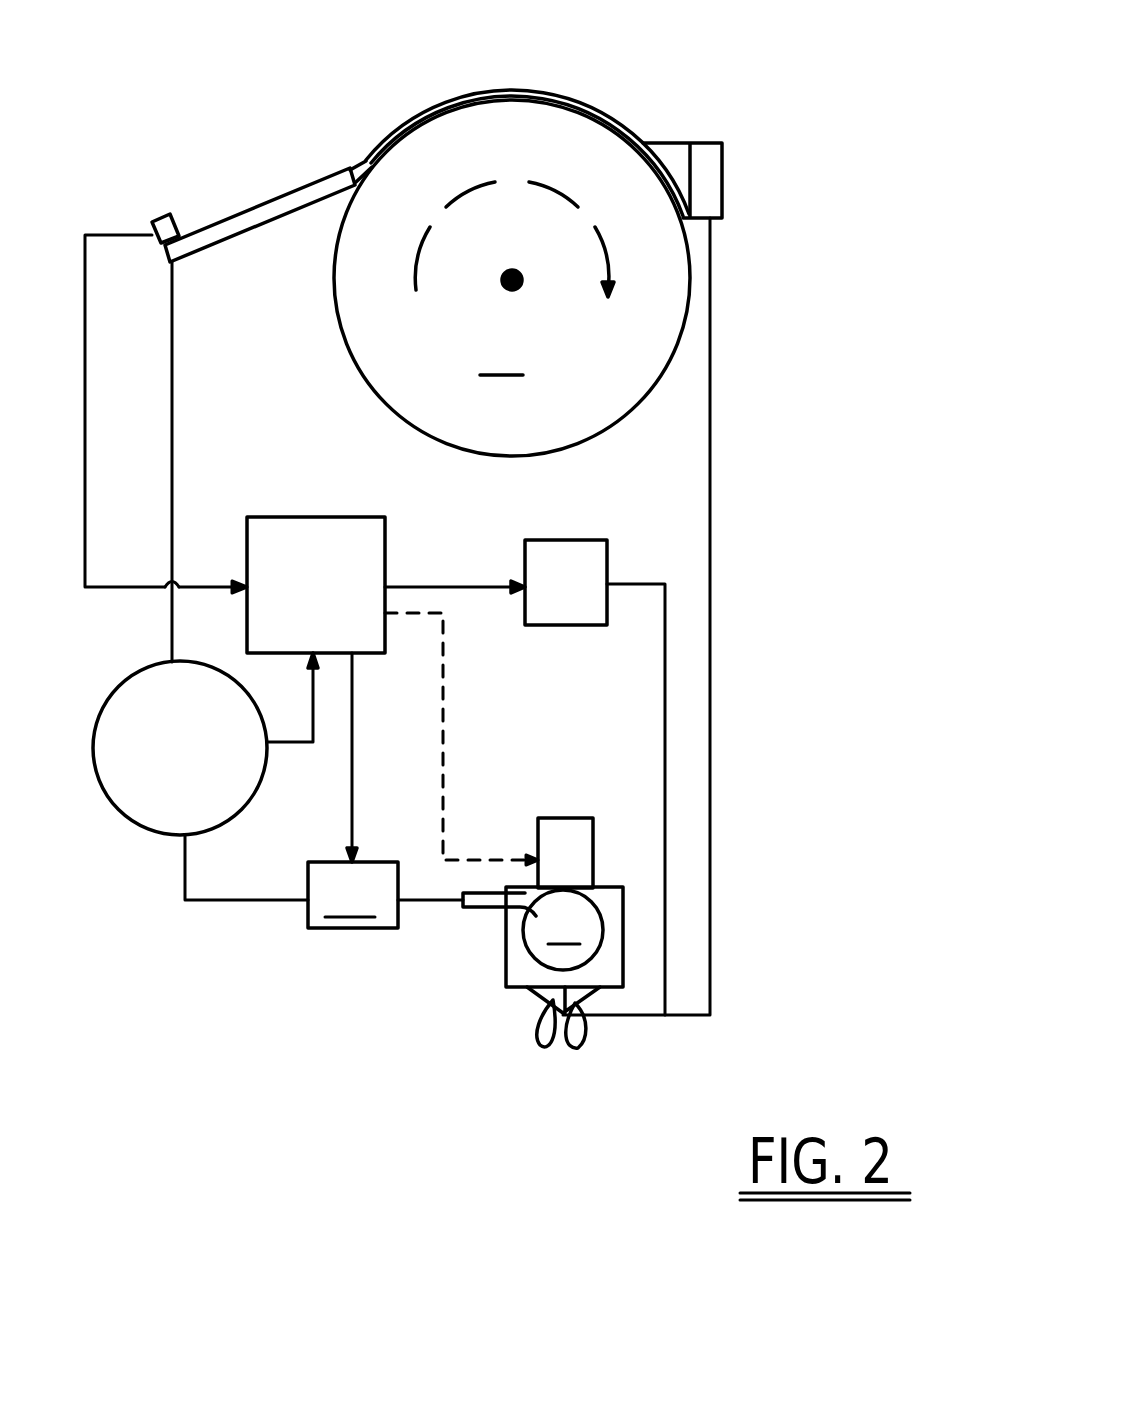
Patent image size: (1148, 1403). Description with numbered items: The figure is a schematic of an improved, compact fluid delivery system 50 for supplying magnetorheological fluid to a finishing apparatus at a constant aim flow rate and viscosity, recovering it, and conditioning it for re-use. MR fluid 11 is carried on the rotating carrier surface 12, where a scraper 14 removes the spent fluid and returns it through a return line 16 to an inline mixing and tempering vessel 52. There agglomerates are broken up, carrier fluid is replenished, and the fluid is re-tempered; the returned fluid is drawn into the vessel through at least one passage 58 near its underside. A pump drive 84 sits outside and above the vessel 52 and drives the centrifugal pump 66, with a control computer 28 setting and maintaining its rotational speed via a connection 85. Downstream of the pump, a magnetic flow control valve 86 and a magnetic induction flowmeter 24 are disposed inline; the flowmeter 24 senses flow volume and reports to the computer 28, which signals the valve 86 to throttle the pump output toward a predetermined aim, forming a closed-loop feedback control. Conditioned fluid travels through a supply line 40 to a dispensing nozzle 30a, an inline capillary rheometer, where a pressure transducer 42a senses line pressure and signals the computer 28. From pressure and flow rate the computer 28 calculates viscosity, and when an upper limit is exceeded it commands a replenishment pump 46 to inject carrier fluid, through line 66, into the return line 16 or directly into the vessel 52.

The MR fluid 11 is at (553, 100).
The carrier surface 12 is at (613, 127).
The scraper 14 is at (706, 177).
The return line 16 is at (708, 572).
The magnetic induction flowmeter 24 is at (222, 795).
The control computer 28 is at (283, 528).
The dispensing nozzle 30a is at (253, 200).
The supply line 40 is at (172, 377).
The pressure transducer 42a is at (163, 215).
The replenishment pump 46 is at (593, 568).
The fluid delivery system 50 is at (795, 308).
The inline mixing and tempering vessel 52 is at (507, 967).
The passage 58 is at (560, 1045).
The pump 66 is at (663, 747).
The pump drive 84 is at (563, 818).
The connection 85 is at (447, 723).
The magnetic flow control valve 86 is at (385, 790).